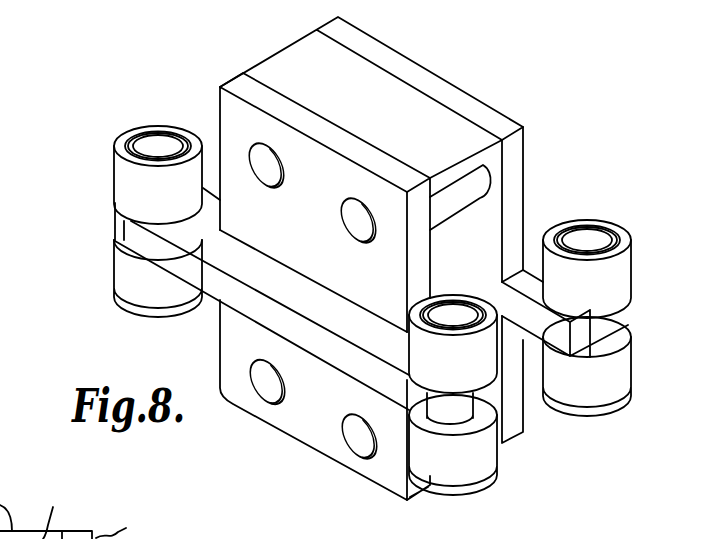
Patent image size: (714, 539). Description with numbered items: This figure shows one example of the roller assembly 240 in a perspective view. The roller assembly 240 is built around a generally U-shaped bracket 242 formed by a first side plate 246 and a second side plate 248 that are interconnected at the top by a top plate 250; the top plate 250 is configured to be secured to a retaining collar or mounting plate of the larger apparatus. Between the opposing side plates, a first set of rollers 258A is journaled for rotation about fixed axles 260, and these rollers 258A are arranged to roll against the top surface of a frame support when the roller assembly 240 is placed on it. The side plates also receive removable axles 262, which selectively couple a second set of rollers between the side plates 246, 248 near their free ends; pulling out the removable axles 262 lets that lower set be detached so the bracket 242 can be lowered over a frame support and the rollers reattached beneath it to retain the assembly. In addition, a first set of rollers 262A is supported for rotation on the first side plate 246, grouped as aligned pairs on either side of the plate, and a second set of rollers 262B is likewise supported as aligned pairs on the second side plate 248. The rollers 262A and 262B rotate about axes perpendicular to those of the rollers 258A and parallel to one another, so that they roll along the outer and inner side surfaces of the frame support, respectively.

The roller assembly 240 is at (548, 96).
The U-shaped bracket 242 is at (236, 72).
The first side plate 246 is at (219, 90).
The second side plate 248 is at (524, 170).
The top plate 250 is at (433, 105).
The rollers of the first set 258A is at (443, 217).
The fixed axles 260 is at (278, 183).
The removable axles 262 is at (268, 396).
The first set of rollers 262A is at (116, 177).
The second set of rollers 262B is at (618, 222).